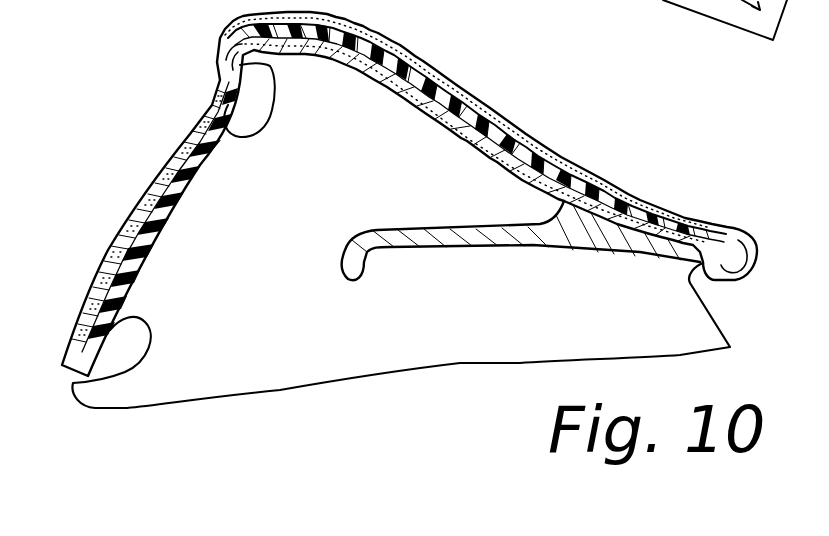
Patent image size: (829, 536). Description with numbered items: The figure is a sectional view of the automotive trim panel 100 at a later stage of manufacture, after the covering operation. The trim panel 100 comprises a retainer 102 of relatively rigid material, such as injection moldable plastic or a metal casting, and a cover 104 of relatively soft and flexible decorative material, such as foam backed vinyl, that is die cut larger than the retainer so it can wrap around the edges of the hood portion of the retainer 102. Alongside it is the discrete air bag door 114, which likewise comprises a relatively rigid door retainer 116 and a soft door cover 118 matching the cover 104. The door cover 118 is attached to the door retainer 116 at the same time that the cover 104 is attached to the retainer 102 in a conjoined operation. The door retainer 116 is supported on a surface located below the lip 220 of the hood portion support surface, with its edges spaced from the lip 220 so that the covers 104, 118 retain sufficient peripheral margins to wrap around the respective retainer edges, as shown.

The trim panel 100 is at (409, 194).
The retainer 102 is at (560, 185).
The cover 104 is at (465, 103).
The air bag door 114 is at (168, 217).
The door retainer 116 is at (175, 186).
The door cover 118 is at (152, 207).
The lip 220 is at (220, 68).